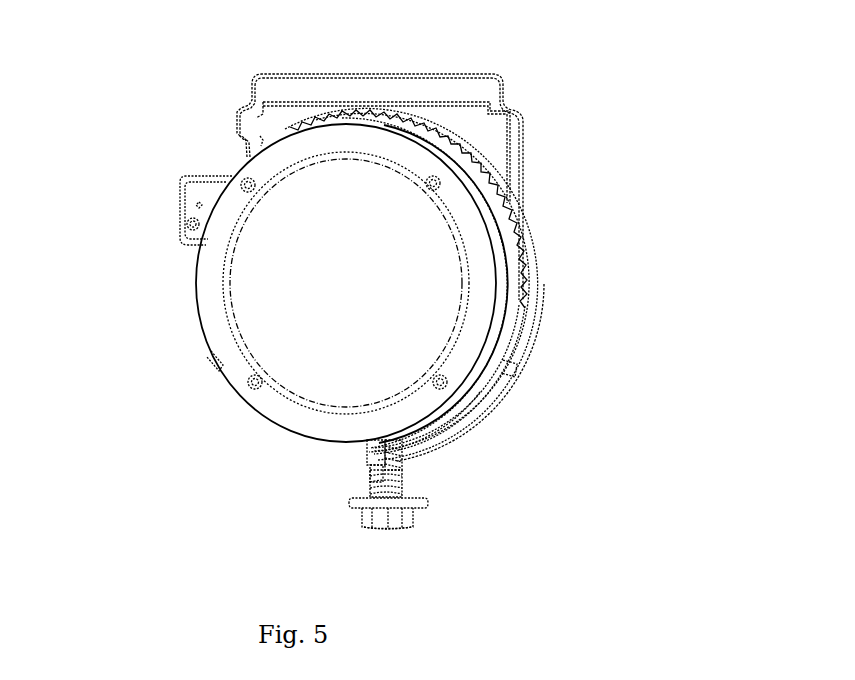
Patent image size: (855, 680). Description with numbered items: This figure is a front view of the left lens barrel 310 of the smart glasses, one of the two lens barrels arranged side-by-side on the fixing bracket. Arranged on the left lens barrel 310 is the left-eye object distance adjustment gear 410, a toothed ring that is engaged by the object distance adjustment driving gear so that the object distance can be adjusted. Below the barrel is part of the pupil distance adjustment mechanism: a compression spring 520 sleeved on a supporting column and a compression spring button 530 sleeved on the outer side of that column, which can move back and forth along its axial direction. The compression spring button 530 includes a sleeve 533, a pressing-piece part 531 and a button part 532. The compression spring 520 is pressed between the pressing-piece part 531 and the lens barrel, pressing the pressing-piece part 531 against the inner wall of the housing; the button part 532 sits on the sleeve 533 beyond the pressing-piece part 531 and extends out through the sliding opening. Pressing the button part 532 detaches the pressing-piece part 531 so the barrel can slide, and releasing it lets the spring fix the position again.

The left lens barrel 310 is at (270, 263).
The left-eye object distance adjustment gear 410 is at (398, 113).
The compression spring 520 is at (405, 453).
The compression spring button 530 is at (470, 538).
The pressing-piece part 531 is at (413, 521).
The button part 532 is at (388, 531).
The sleeve 533 is at (405, 497).